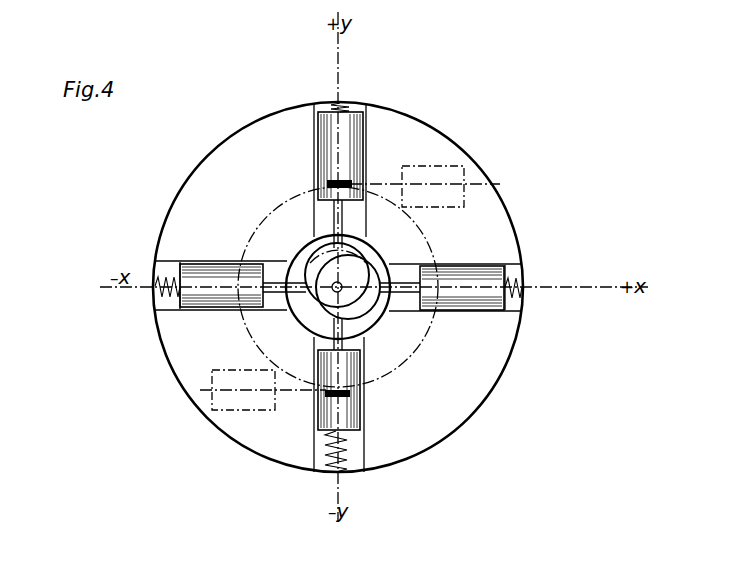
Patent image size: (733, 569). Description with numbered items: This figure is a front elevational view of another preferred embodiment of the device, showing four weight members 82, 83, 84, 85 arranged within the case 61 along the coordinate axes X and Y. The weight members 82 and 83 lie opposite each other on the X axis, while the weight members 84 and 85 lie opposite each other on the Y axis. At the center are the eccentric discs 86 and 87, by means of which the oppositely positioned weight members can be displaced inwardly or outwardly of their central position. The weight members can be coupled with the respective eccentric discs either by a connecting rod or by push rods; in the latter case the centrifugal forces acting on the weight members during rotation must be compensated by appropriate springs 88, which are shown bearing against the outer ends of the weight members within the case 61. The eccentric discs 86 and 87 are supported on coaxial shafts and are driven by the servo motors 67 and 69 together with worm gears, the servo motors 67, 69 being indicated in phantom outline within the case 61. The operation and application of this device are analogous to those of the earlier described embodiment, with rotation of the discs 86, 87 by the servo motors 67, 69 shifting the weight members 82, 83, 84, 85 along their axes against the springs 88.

The case 61 is at (511, 368).
The servo motor 67 is at (441, 177).
The servo motor 69 is at (240, 397).
The weight member 82 is at (508, 264).
The weight member 83 is at (188, 262).
The weight member 84 is at (328, 128).
The weight member 85 is at (350, 412).
The eccentric disc 86 is at (367, 303).
The eccentric disc 87 is at (322, 256).
The spring 88 is at (341, 461).